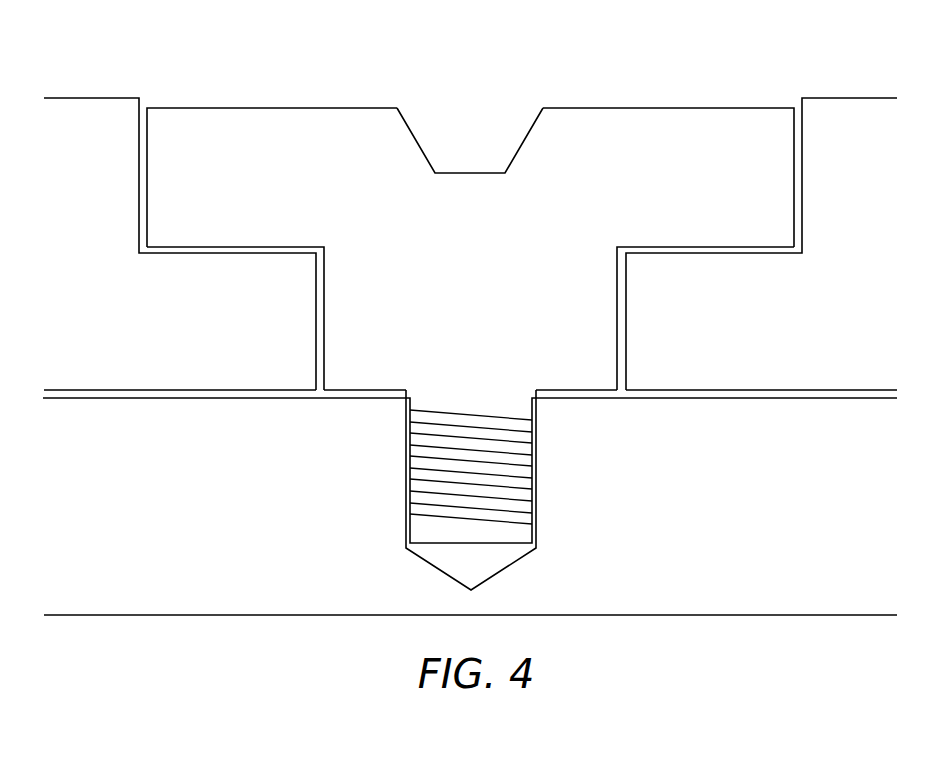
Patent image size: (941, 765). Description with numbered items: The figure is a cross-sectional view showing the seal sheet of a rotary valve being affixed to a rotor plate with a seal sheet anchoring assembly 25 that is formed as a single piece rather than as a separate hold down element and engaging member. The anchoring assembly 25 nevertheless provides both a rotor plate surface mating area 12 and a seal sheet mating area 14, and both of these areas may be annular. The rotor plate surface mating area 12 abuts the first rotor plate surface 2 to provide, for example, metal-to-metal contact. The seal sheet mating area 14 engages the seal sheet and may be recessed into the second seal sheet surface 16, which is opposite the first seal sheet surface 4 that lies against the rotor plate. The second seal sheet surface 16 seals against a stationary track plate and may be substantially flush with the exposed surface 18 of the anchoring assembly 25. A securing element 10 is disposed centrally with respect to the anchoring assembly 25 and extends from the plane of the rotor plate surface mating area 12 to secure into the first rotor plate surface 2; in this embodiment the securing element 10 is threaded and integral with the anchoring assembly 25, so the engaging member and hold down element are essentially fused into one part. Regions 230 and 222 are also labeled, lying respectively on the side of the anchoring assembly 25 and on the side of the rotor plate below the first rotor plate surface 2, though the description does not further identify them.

The first rotor plate surface 2 is at (753, 398).
The first seal sheet surface 4 is at (787, 390).
The securing element 10 is at (425, 467).
The rotor plate surface mating area 12 is at (562, 389).
The seal sheet mating area 14 is at (671, 247).
The second seal sheet surface 16 is at (861, 98).
The exposed surface 18 is at (627, 108).
The seal sheet anchoring assembly 25 is at (470, 166).
The lower structure region 222 is at (470, 525).
The upper structure region 230 is at (913, 188).